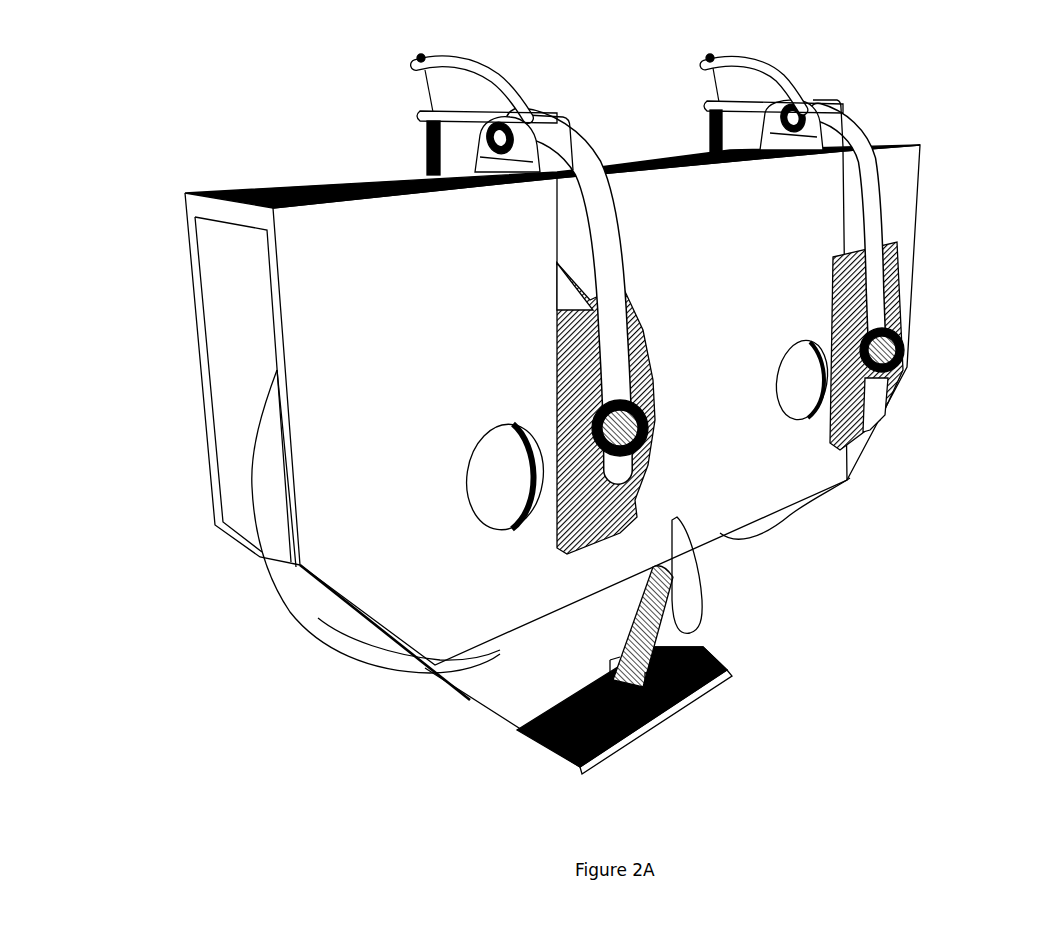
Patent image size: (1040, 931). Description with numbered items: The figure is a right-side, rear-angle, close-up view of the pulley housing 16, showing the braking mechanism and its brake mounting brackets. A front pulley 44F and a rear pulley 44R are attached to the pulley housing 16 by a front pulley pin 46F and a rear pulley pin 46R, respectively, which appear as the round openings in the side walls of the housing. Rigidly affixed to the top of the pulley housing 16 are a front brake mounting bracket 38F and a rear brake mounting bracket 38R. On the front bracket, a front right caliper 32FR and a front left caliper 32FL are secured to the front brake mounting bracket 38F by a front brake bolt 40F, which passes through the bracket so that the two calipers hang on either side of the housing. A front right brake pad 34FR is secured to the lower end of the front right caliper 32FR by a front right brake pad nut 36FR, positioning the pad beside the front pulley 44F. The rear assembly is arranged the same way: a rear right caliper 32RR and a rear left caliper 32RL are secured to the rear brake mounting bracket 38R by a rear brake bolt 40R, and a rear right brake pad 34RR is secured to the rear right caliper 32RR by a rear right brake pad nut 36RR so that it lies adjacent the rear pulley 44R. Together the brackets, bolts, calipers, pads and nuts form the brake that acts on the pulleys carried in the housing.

The pulley housing 16 is at (273, 181).
The rear left caliper 32RL is at (473, 63).
The rear right caliper 32RR is at (620, 287).
The front left caliper 32FL is at (777, 63).
The front right caliper 32FR is at (880, 220).
The rear right brake pad 34RR is at (578, 560).
The front right brake pad 34FR is at (883, 417).
The rear right brake pad nut 36RR is at (655, 412).
The front right brake pad nut 36FR is at (905, 340).
The rear brake mounting bracket 38R is at (538, 128).
The front brake mounting bracket 38F is at (822, 107).
The rear brake bolt 40R is at (500, 167).
The front brake bolt 40F is at (793, 143).
The rear pulley 44R is at (287, 582).
The front pulley 44F is at (777, 523).
The rear pulley pin 46R is at (480, 477).
The front pulley pin 46F is at (797, 387).